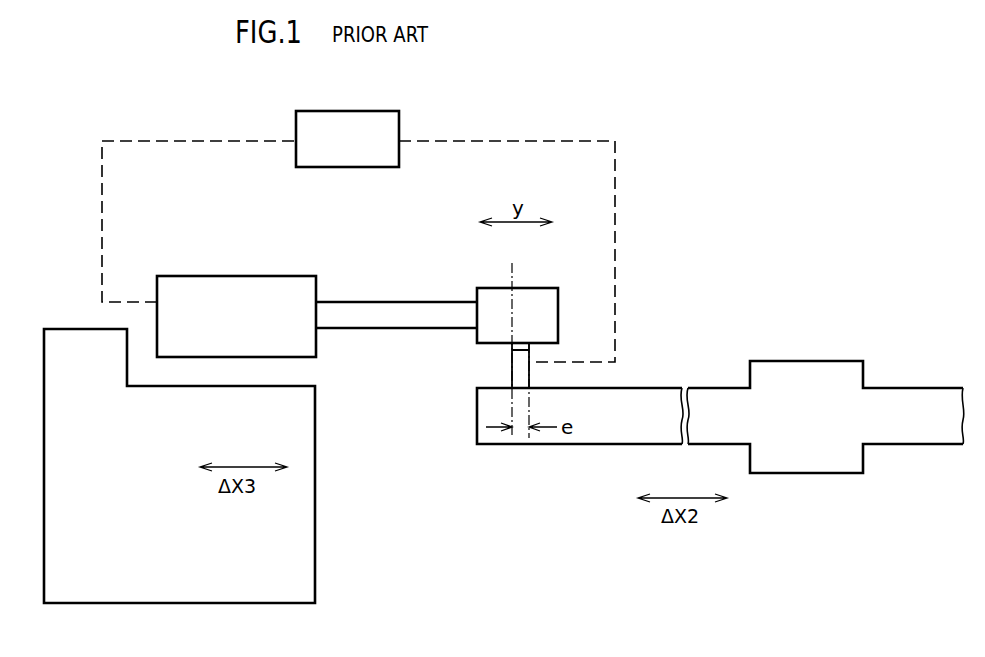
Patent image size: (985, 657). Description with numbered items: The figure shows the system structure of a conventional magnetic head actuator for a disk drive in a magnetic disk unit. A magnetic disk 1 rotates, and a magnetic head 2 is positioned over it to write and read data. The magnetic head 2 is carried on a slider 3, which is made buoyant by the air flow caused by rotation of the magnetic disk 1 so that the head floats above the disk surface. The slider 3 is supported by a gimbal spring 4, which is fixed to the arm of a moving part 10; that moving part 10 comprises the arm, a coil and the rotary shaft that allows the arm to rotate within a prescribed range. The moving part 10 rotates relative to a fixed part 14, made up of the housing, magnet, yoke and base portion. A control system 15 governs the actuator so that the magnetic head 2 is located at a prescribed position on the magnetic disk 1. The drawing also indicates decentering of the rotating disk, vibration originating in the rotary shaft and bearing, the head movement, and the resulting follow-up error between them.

The magnetic disk 1 is at (812, 361).
The magnetic head 2 is at (511, 350).
The slider 3 is at (553, 288).
The gimbal spring 4 is at (388, 302).
The moving part 10 is at (272, 276).
The fixed part 14 is at (315, 494).
The control system 15 is at (370, 111).